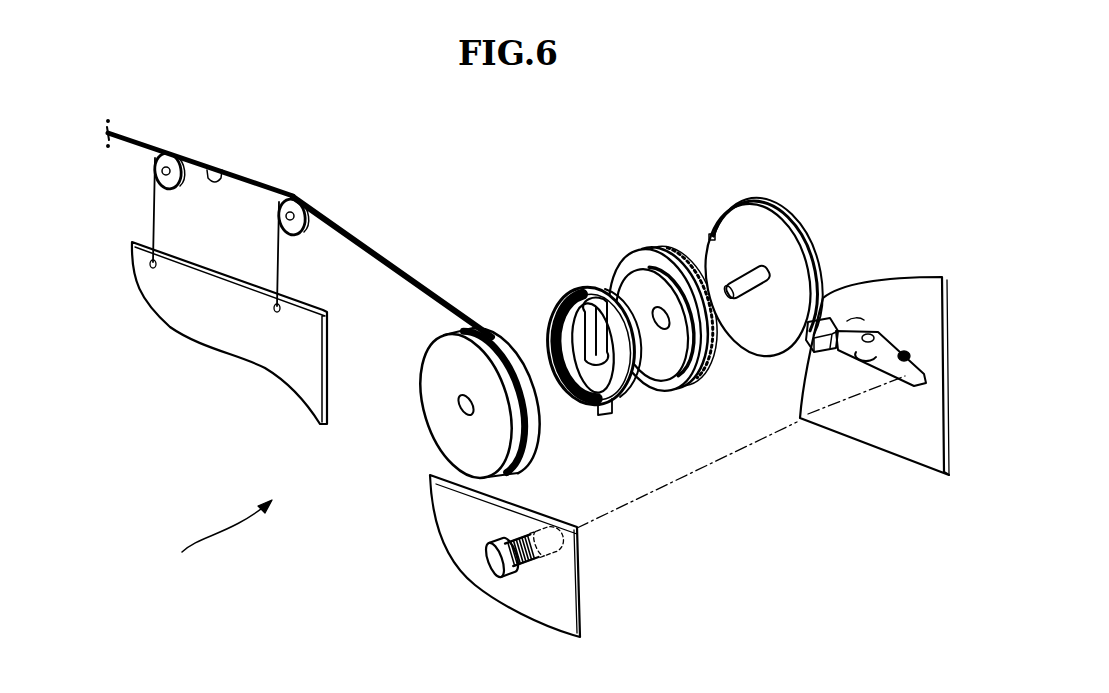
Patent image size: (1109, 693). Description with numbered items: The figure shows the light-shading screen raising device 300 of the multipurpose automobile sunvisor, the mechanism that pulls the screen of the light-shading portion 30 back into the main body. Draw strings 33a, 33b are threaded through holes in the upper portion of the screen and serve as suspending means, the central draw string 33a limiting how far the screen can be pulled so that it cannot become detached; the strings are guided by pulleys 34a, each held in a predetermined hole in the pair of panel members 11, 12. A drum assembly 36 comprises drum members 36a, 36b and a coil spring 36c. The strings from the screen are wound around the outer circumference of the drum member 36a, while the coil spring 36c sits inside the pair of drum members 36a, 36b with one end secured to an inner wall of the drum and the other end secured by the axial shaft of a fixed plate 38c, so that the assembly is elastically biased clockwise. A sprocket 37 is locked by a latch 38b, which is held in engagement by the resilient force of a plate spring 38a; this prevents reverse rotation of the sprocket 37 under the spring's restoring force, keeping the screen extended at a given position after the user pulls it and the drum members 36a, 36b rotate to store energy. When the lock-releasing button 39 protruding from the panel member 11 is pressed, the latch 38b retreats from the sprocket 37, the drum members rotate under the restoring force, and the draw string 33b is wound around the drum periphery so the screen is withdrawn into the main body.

The panel member 11 is at (880, 290).
The panel member 12 is at (553, 583).
The light-shading portion 30 is at (212, 335).
The draw string 33a is at (215, 165).
The draw string 33b is at (383, 257).
The pulley 34a is at (307, 207).
The drum assembly 36 is at (560, 326).
The drum member 36a is at (467, 365).
The drum member 36b is at (645, 282).
The coil spring 36c is at (560, 287).
The sprocket 37 is at (678, 248).
The plate spring 38a is at (770, 230).
The latch 38b is at (803, 362).
The fixed plate 38c is at (731, 244).
The lock-releasing button 39 is at (487, 562).
The light-shading screen raising device 300 is at (216, 539).